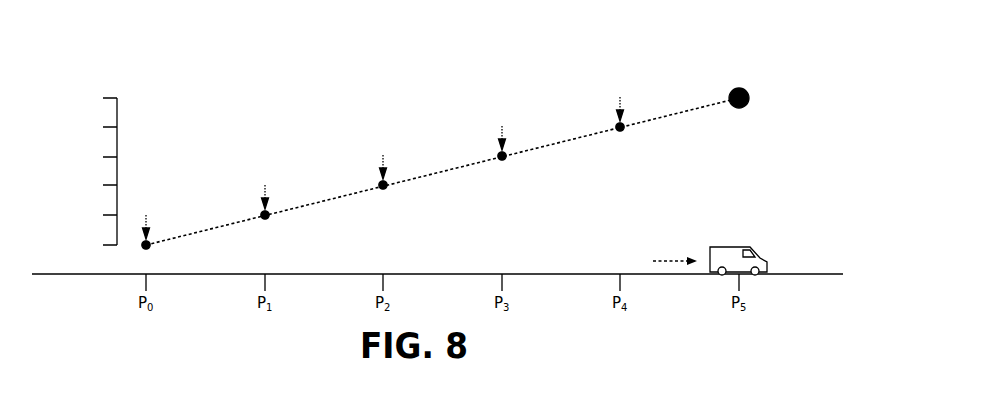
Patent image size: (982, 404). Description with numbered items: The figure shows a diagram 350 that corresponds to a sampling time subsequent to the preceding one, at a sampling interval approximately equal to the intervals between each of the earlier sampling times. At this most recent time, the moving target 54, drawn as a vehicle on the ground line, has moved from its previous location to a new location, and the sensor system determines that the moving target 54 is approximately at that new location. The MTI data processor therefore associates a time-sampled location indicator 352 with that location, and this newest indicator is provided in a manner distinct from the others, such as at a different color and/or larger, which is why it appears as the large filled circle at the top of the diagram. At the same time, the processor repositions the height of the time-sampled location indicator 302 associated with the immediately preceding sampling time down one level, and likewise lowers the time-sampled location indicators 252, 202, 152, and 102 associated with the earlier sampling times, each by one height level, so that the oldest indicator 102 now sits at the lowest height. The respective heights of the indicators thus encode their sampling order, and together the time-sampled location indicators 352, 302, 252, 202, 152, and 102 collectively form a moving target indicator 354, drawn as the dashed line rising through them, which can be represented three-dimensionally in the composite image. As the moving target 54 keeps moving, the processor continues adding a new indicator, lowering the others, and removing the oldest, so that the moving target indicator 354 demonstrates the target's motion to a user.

The diagram 350 is at (105, 66).
The moving target indicator 354 is at (472, 162).
The time-sampled location indicator 102 is at (149, 248).
The time-sampled location indicator 152 is at (268, 218).
The time-sampled location indicator 202 is at (386, 189).
The time-sampled location indicator 252 is at (505, 160).
The time-sampled location indicator 302 is at (623, 131).
The time-sampled location indicator 352 is at (745, 106).
The moving target 54 is at (737, 247).